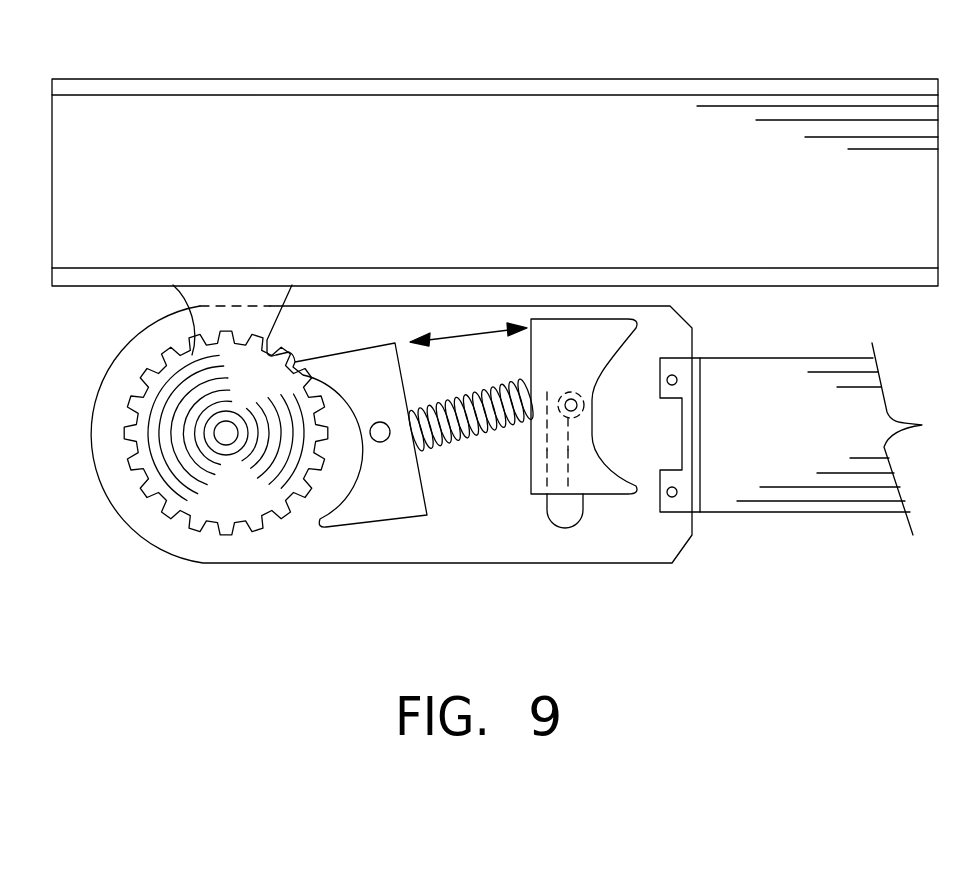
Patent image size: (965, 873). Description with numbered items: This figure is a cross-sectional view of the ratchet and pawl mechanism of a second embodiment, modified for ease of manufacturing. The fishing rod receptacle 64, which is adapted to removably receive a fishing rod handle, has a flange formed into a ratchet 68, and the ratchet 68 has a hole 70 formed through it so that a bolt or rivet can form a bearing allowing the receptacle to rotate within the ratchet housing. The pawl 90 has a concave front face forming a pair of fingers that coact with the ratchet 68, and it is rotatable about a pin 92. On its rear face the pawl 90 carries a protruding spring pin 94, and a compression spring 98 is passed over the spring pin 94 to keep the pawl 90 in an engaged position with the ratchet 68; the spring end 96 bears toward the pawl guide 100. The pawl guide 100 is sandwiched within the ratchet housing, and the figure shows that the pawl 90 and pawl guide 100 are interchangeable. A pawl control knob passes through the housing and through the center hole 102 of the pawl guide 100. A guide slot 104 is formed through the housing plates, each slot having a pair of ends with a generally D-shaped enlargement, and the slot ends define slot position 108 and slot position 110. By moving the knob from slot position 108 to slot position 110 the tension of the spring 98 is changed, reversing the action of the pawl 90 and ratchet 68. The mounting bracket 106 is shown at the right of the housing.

The fishing rod receptacle 64 is at (458, 79).
The ratchet 68 is at (145, 473).
The hole 70 is at (226, 440).
The pawl 90 is at (383, 498).
The pin 92 is at (381, 422).
The spring pin 94 is at (422, 447).
The spring end 96 is at (510, 428).
The compression spring 98 is at (456, 425).
The pawl guide 100 is at (585, 332).
The center hole 102 is at (580, 400).
The guide slot 104 is at (558, 478).
The bracket rail 106 is at (622, 423).
The slot position 108 is at (553, 420).
The slot position 110 is at (570, 520).